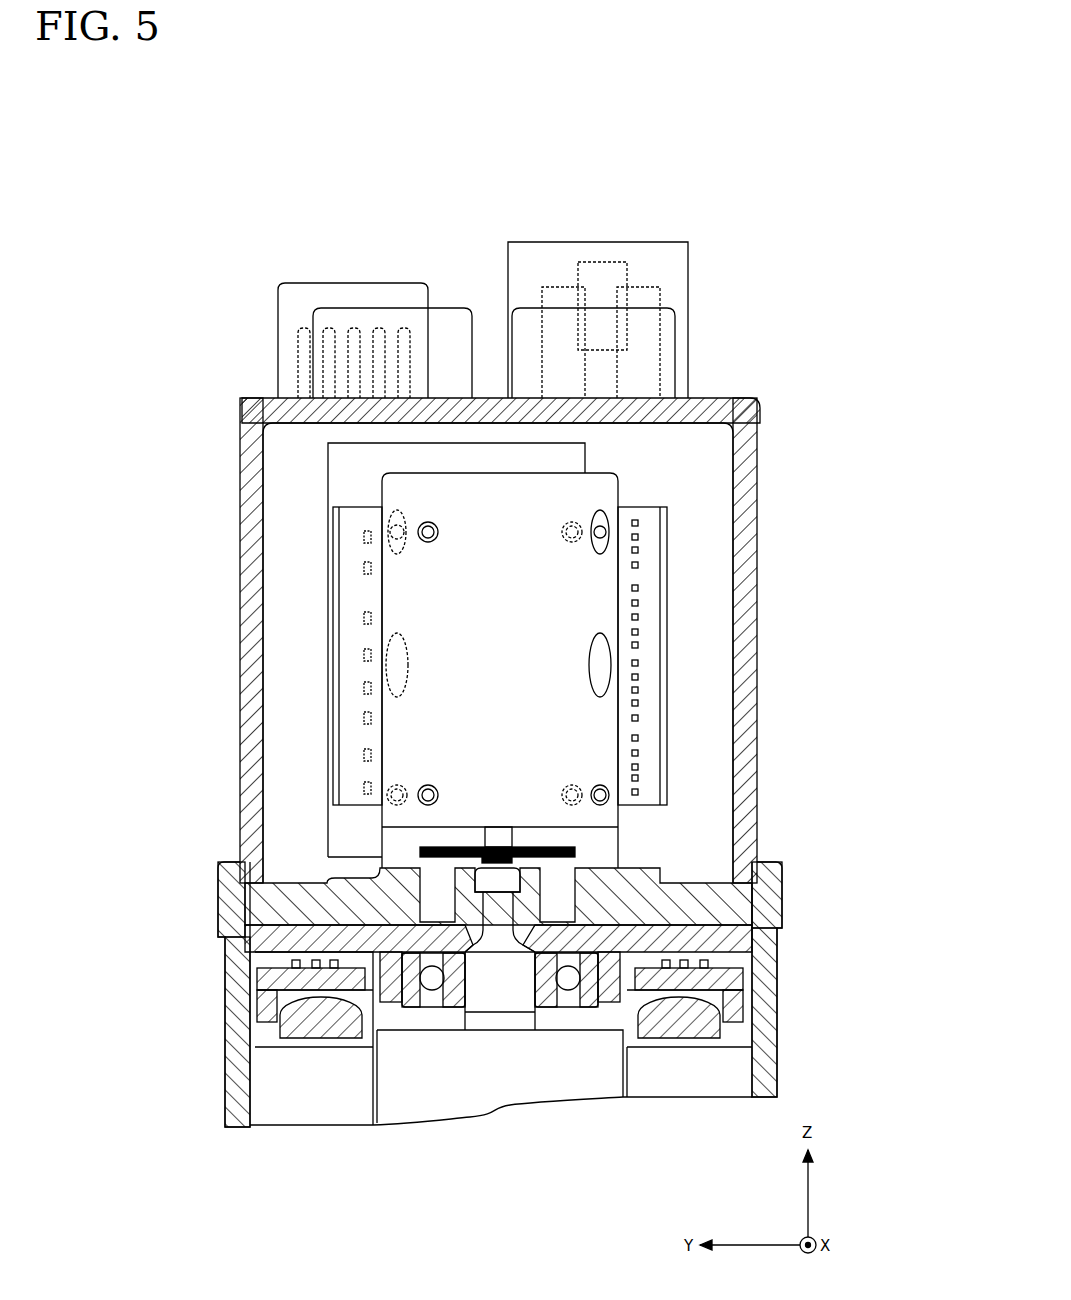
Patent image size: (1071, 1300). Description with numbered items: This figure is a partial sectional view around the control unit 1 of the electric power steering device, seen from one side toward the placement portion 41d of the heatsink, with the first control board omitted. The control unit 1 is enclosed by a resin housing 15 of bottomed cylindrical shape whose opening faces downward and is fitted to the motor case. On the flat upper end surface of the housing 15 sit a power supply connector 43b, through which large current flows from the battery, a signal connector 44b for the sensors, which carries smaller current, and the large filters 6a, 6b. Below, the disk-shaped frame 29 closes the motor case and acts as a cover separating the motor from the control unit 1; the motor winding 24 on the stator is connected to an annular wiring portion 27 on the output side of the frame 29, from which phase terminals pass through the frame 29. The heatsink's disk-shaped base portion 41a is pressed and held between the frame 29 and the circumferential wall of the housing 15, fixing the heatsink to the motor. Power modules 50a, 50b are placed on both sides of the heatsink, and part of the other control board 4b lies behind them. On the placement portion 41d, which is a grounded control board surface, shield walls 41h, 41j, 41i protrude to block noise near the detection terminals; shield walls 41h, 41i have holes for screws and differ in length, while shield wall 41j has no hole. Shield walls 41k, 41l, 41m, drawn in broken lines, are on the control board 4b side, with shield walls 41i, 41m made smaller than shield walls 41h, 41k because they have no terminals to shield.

The control unit 1 is at (767, 390).
The signal connector 44b is at (383, 283).
The filter 6a is at (466, 308).
The power supply connector 43b is at (623, 242).
The filter 6b is at (672, 308).
The control board 4b is at (327, 447).
The placement portion 41d is at (393, 500).
The shield wall 41k is at (388, 527).
The shield wall 41h is at (606, 527).
The shield wall 41l is at (384, 668).
The shield wall 41j is at (607, 645).
The shield wall 41m is at (386, 790).
The shield wall 41i is at (605, 785).
The power module 50b is at (333, 590).
The power module 50a is at (667, 572).
The housing 15 is at (780, 862).
The base portion 41a is at (255, 877).
The annular wiring portion 27 is at (232, 1000).
The frame 29 is at (775, 988).
The motor winding 24 is at (752, 1075).